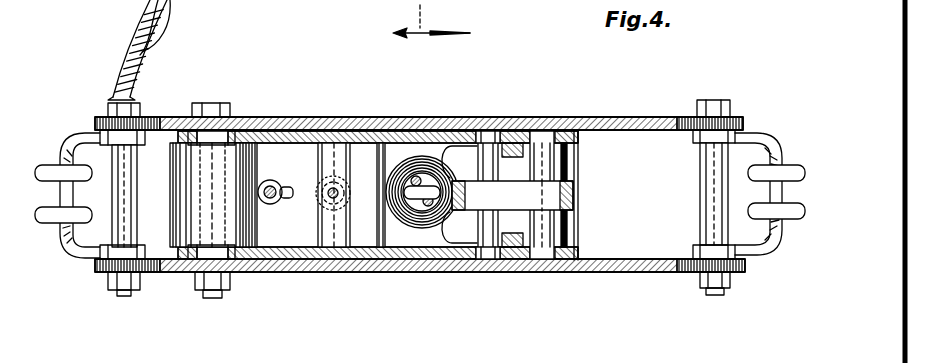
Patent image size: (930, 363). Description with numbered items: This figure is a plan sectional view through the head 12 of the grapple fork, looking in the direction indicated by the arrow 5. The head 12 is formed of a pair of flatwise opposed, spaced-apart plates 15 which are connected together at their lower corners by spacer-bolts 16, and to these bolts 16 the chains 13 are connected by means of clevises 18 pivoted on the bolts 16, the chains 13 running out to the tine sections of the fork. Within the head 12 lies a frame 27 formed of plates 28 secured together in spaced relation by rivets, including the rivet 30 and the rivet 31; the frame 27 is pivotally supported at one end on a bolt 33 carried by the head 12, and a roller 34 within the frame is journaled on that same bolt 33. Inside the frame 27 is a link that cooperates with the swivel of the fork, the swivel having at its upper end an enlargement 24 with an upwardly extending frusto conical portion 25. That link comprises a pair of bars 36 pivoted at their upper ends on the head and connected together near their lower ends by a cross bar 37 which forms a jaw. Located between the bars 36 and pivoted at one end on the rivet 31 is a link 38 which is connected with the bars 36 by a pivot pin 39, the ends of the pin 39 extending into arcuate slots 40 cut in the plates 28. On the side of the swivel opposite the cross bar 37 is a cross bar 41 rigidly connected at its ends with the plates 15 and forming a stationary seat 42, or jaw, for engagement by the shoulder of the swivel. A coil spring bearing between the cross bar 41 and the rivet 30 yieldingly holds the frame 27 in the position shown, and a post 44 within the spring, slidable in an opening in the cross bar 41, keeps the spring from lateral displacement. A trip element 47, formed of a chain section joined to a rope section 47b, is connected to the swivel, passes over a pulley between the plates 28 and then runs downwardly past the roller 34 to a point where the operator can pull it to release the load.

The viewing direction arrow for FIG. 5 is at (431, 33).
The head 12 is at (172, 116).
The chains 13 is at (52, 180).
The plates 15 is at (626, 117).
The spacer-bolts 16 is at (115, 193).
The clevises 18 is at (68, 148).
The enlargement 24 is at (428, 175).
The frusto conical portion 25 is at (404, 205).
The frame 27 is at (287, 130).
The plates 28 is at (302, 130).
The rivet 30 is at (350, 150).
The rivet 31 is at (548, 131).
The bolt 33 is at (196, 262).
The roller 34 is at (186, 170).
The bars 36 is at (530, 152).
The cross bar 37 is at (445, 165).
The link 38 is at (575, 187).
The pivot pin 39 is at (488, 131).
The arcuate slots 40 is at (499, 131).
The cross bar 41 is at (366, 235).
The stationary seat 42 is at (394, 160).
The post 44 is at (326, 197).
The trip element 47 is at (276, 186).
The rope section 47b is at (124, 52).